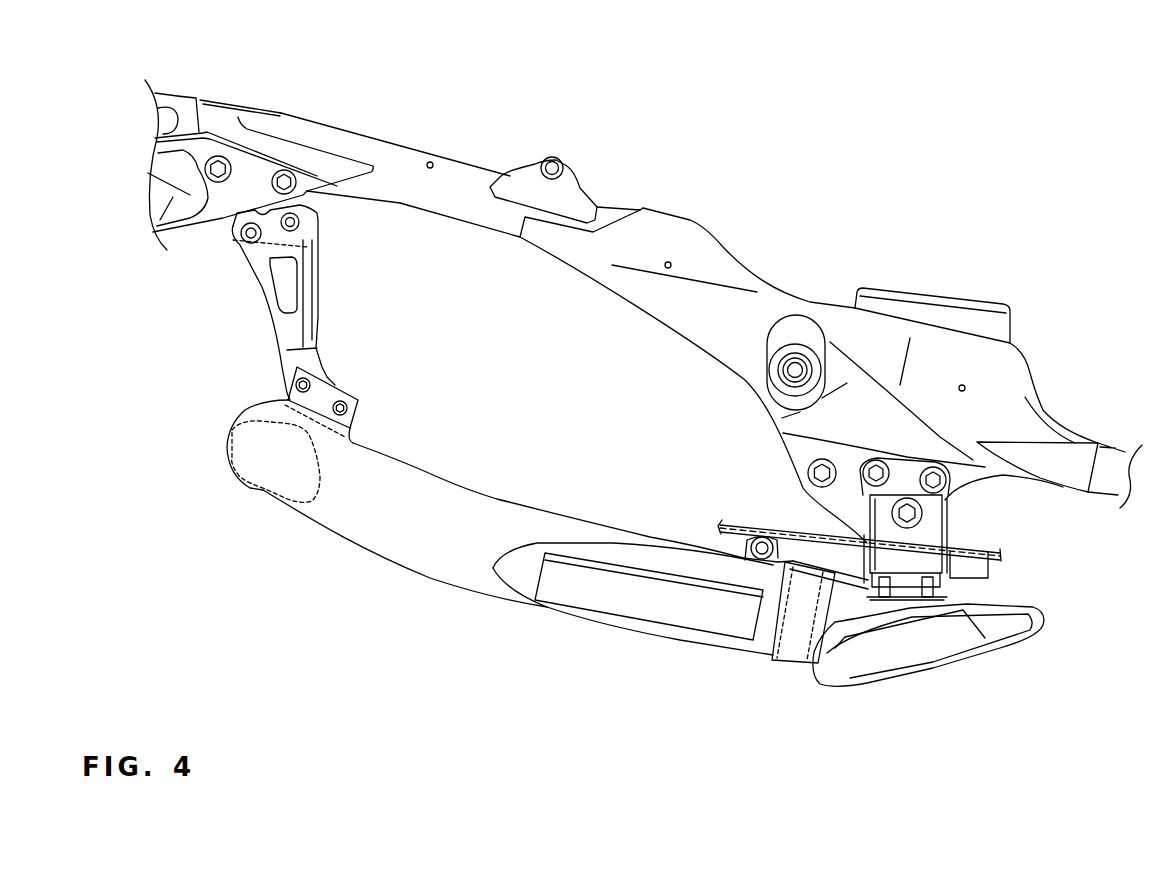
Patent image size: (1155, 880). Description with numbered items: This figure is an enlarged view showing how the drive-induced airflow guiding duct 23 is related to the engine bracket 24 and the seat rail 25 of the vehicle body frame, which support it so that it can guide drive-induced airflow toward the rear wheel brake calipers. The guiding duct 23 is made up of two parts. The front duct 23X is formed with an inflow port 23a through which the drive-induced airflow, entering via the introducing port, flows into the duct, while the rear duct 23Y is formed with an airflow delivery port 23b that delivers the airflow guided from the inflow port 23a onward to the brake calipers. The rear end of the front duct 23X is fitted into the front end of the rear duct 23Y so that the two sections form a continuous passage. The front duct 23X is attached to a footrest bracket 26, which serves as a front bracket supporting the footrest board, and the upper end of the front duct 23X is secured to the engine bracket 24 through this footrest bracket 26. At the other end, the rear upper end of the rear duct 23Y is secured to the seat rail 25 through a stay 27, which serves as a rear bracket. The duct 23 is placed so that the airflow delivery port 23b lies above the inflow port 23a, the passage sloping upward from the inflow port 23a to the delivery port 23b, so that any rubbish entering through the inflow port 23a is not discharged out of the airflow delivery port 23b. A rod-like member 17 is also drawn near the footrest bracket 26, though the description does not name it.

The rod 17 is at (738, 525).
The drive-induced airflow guiding duct 23 is at (950, 737).
The inflow port 23a is at (918, 650).
The airflow delivery port 23b is at (250, 477).
The front duct 23X is at (838, 622).
The rear duct 23Y is at (458, 547).
The engine bracket 24 is at (683, 230).
The seat rail 25 is at (460, 182).
The footrest bracket 26 is at (933, 532).
The stay 27 is at (287, 330).